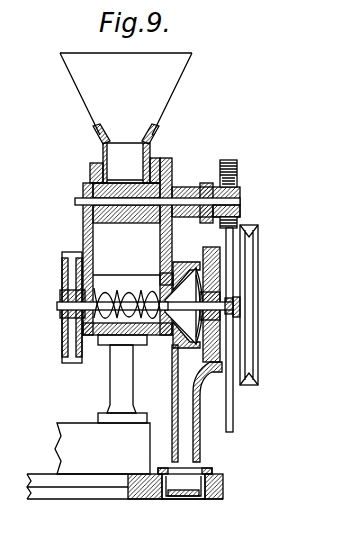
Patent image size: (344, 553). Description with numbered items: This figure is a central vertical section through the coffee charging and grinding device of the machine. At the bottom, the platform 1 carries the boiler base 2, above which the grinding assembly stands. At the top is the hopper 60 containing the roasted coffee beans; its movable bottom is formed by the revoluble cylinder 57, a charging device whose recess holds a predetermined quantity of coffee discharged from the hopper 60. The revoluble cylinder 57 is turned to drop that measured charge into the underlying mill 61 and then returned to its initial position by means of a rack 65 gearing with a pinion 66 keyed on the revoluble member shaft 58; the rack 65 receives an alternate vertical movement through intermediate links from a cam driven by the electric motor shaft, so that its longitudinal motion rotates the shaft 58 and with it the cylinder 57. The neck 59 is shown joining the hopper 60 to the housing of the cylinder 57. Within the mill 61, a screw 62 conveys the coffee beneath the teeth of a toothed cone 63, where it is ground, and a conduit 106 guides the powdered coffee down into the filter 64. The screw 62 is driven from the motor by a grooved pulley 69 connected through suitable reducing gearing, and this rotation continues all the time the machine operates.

The platform 1 is at (96, 492).
The boiler base 2 is at (102, 409).
The revoluble cylinder 57 is at (126, 219).
The revoluble member shaft 58 is at (75, 200).
The neck 59 is at (157, 162).
The hopper 60 is at (126, 94).
The mill 61 is at (140, 287).
The screw 62 is at (104, 297).
The toothed cone 63 is at (184, 298).
The filter 64 is at (208, 470).
The rack 65 is at (232, 160).
The pinion 66 is at (242, 212).
The grooved pulley 69 is at (259, 297).
The discharge tube 106 is at (187, 438).